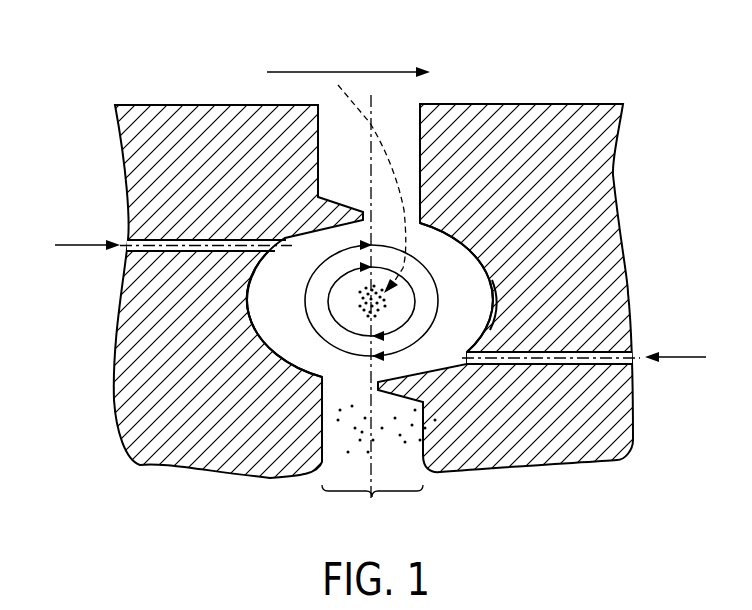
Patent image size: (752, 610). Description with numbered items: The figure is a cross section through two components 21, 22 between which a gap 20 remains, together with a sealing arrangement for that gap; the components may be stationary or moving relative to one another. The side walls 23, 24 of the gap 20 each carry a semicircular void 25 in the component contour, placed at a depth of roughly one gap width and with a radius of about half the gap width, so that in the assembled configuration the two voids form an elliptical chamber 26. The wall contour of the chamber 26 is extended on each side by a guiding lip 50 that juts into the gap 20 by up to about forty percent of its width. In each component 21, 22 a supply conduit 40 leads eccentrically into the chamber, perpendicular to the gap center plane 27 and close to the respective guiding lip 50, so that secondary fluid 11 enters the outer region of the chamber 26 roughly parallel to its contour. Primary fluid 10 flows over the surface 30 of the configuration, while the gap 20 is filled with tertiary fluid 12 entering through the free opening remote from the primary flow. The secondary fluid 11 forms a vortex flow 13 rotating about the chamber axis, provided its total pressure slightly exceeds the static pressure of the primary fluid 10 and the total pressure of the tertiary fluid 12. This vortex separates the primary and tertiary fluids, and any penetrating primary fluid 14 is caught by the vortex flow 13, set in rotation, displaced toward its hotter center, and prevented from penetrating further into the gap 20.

The primary fluid 10 is at (305, 72).
The secondary fluid 11 is at (64, 245).
The tertiary fluid 12 is at (355, 435).
The vortex flow 13 is at (366, 293).
The penetrating primary fluid 14 is at (398, 168).
The gap 20 is at (372, 509).
The component 21 is at (172, 122).
The component 22 is at (562, 112).
The side wall 23 is at (318, 135).
The side wall 24 is at (419, 118).
The semicircular void 25 is at (254, 286).
The elliptical chamber 26 is at (462, 258).
The gap center plane 27 is at (370, 105).
The surface 30 is at (240, 105).
The supply conduit 40 is at (150, 243).
The guiding lip 50 is at (345, 220).